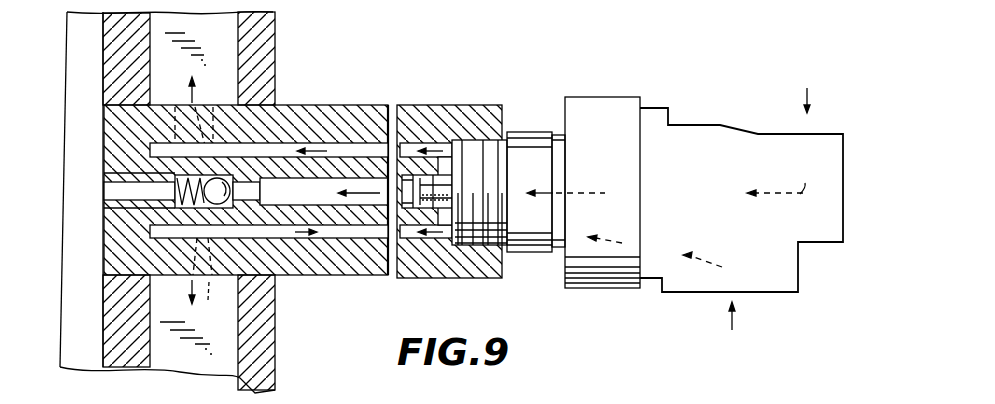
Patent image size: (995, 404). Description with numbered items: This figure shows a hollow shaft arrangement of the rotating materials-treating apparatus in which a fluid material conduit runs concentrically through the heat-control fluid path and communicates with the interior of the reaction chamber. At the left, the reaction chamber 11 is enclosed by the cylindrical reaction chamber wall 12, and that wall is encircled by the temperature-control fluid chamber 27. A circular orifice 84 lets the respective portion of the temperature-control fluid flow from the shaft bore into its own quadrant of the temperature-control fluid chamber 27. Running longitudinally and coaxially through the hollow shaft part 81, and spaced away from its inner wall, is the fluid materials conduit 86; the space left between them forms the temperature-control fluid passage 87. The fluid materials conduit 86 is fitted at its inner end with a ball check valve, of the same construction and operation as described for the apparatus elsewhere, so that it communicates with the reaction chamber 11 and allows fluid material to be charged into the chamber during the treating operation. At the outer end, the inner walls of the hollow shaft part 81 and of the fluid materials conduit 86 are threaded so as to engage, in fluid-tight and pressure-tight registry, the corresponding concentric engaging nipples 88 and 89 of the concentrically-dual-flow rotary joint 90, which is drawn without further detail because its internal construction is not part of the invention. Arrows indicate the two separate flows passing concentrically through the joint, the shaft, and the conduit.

The reaction chamber 11 is at (78, 216).
The cylindrical reaction chamber wall 12 is at (108, 57).
The temperature-control fluid chamber 27 is at (217, 36).
The valve body 81 is at (328, 105).
The circular orifice 84 is at (193, 296).
The fluid materials conduit 86 is at (290, 224).
The temperature-control fluid passage 87 is at (355, 150).
The engaging nipple 88 is at (483, 157).
The engaging nipple 89 is at (433, 185).
The concentrically-dual-flow rotary joint 90 is at (657, 103).